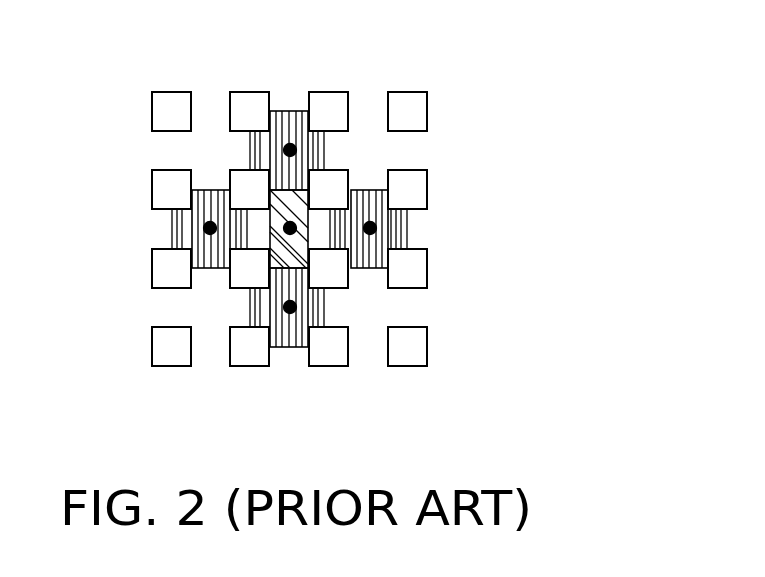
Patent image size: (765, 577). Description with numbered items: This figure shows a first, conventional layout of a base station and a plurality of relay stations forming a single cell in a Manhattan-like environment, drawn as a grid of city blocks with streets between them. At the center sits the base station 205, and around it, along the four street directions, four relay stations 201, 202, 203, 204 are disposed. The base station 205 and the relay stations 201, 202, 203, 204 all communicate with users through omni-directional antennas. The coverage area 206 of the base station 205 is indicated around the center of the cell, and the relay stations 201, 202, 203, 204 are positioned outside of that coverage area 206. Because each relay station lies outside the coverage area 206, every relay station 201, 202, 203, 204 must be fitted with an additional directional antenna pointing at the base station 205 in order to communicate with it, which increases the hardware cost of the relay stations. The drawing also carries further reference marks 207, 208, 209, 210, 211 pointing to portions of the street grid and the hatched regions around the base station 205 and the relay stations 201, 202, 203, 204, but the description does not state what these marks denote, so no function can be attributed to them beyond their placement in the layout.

The relay station 201 is at (291, 144).
The relay station 202 is at (376, 228).
The relay station 203 is at (290, 314).
The relay station 204 is at (205, 228).
The base station 205 is at (290, 222).
The coverage area 206 is at (258, 165).
The upper conductive line 207 is at (272, 166).
The via 208 is at (377, 180).
The via 209 is at (330, 312).
The via 210 is at (170, 220).
The pad 211 is at (172, 92).